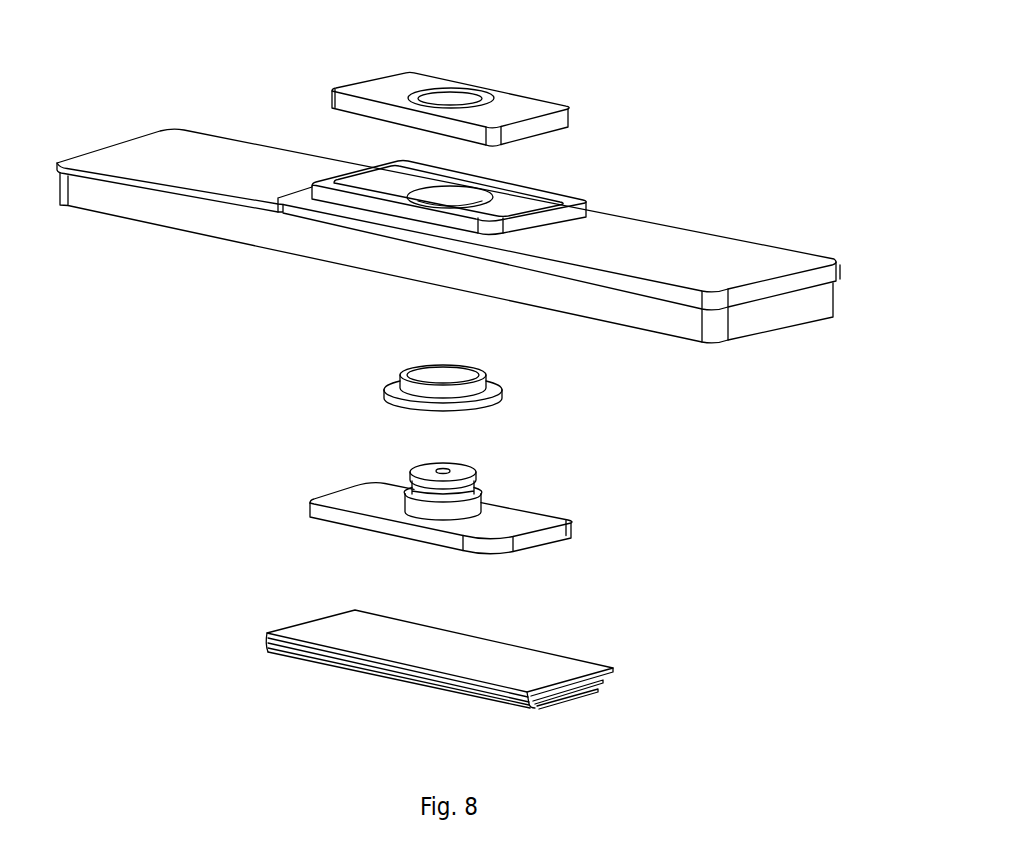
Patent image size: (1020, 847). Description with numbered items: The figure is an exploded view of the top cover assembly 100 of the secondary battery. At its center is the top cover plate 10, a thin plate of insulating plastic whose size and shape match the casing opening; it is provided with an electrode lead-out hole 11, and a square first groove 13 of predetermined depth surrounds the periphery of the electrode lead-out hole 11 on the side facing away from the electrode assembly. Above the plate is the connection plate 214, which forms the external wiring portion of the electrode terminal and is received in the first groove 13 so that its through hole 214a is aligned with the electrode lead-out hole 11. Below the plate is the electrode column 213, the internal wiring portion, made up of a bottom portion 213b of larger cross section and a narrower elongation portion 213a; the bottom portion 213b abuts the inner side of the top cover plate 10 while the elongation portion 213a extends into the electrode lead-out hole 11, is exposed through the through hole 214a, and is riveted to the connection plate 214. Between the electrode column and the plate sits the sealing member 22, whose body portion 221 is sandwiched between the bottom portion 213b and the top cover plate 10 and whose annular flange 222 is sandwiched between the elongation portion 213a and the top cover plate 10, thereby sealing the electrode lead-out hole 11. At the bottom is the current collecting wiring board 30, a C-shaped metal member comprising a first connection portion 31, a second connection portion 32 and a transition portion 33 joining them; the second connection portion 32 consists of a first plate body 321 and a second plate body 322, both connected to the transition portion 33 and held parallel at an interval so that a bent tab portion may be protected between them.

The top cover assembly 100 is at (683, 82).
The top cover plate 10 is at (448, 219).
The electrode lead-out hole 11 is at (440, 202).
The first groove 13 is at (530, 199).
The connection plate 214 is at (477, 83).
The through hole 214a is at (446, 100).
The sealing member 22 is at (528, 394).
The body portion 221 is at (473, 407).
The annular flange 222 is at (474, 389).
The electrode column 213 is at (516, 508).
The elongation portion 213a is at (450, 505).
The bottom portion 213b is at (530, 526).
The current collecting wiring board 30 is at (472, 659).
The first connection portion 31 is at (527, 663).
The second connection portion 32 is at (504, 686).
The first plate body 321 is at (562, 700).
The second plate body 322 is at (583, 681).
The transition portion 33 is at (390, 668).